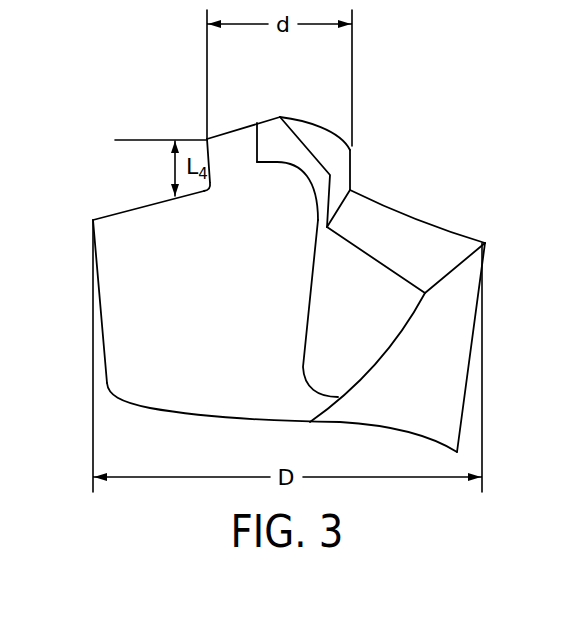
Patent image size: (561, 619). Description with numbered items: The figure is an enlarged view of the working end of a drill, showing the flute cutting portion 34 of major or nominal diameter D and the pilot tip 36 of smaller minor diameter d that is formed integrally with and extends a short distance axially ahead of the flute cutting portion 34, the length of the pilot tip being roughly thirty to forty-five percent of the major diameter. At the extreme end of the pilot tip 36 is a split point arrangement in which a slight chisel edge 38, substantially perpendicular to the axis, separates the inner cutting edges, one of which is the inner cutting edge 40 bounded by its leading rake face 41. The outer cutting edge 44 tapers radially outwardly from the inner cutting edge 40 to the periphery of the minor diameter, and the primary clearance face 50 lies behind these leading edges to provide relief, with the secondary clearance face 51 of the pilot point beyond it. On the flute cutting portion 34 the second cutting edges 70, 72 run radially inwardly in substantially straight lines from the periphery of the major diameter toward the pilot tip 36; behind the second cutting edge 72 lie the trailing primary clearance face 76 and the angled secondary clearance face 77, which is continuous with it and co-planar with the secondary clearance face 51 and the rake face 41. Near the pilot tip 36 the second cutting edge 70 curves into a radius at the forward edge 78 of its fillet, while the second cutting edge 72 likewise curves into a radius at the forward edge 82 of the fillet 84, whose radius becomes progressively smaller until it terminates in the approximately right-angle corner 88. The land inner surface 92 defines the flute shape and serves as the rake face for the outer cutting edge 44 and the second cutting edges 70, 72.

The flute cutting portion 34 is at (124, 195).
The pilot tip 36 is at (124, 126).
The chisel edge 38 is at (284, 112).
The inner cutting edge 40 is at (270, 132).
The rake face 41 is at (259, 124).
The outer cutting edge 44 is at (202, 137).
The primary clearance face 50 is at (333, 148).
The secondary clearance face 51 is at (310, 173).
The second cutting edge 70 is at (123, 214).
The second cutting edge 72 is at (463, 250).
The primary clearance face 76 is at (486, 243).
The secondary clearance face 77 is at (373, 348).
The forward edge 78 is at (211, 190).
The forward edge 82 is at (350, 190).
The fillet 84 is at (328, 226).
The corner 88 is at (329, 230).
The land inner surface 92 is at (220, 327).